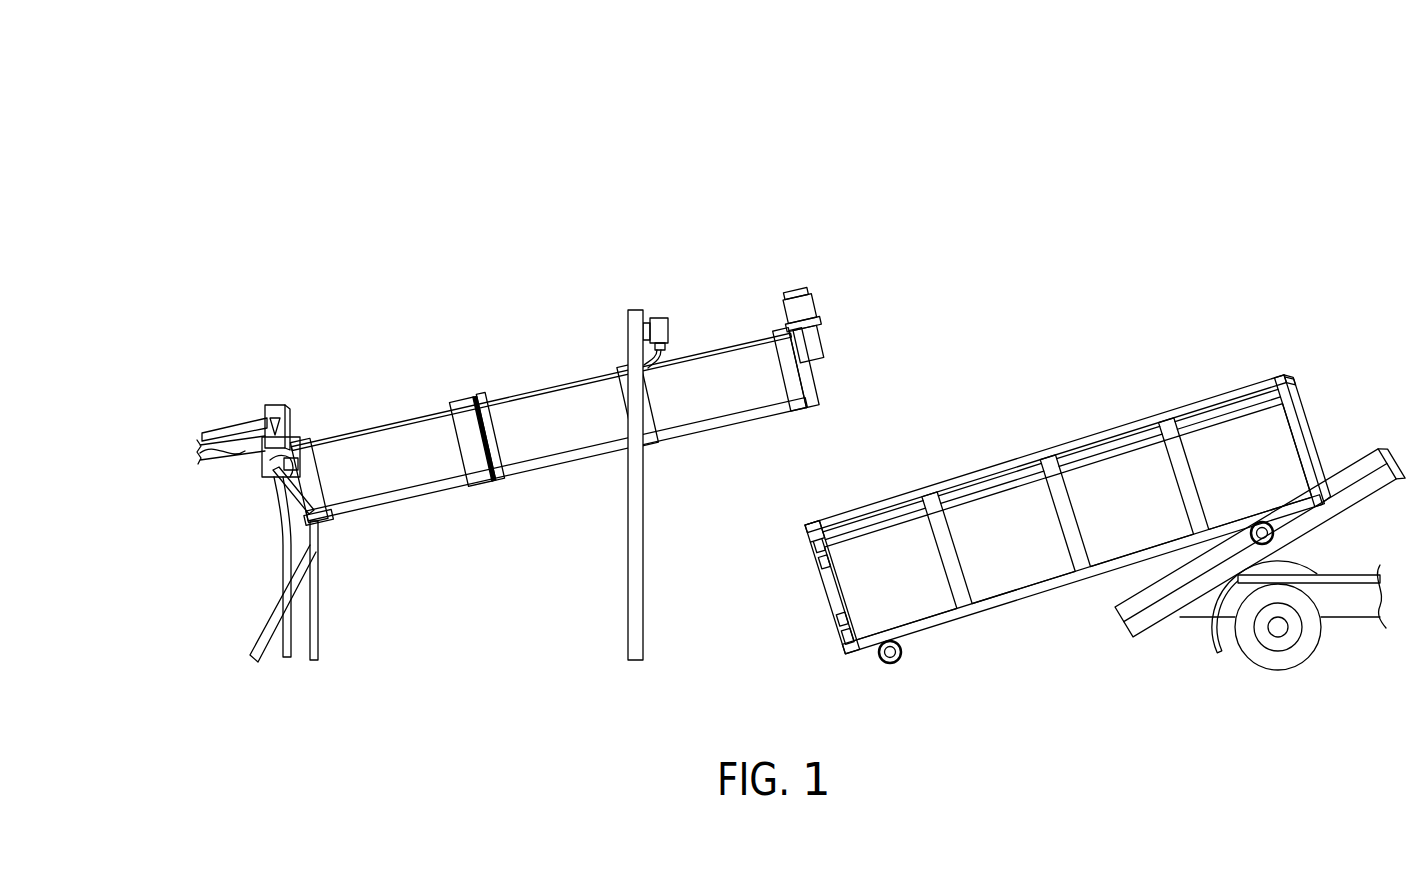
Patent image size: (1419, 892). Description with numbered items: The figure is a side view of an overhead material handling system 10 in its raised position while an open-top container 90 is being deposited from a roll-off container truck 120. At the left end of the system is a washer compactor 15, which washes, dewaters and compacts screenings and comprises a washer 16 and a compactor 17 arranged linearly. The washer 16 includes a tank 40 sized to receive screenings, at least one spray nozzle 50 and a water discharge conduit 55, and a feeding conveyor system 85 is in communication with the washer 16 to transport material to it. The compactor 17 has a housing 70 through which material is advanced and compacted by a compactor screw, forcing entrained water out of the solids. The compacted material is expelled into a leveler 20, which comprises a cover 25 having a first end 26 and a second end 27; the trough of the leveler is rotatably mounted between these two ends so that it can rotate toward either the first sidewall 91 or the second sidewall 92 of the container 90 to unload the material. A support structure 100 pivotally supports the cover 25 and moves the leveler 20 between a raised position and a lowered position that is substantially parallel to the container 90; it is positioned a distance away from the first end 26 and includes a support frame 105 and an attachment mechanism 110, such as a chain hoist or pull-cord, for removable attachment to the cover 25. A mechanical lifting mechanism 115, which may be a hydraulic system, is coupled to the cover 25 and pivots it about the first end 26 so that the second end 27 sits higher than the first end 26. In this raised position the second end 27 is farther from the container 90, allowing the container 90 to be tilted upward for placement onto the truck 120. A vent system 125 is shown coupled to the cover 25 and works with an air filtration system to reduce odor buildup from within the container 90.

The overhead material handling system 10 is at (304, 135).
The washer compactor 15 is at (199, 536).
The washer 16 is at (263, 466).
The compactor 17 is at (273, 473).
The leveler 20 is at (538, 377).
The cover 25 is at (436, 412).
The first end of the cover 26 is at (328, 415).
The second end of the cover 27 is at (763, 324).
The tank 40 is at (206, 451).
The spray nozzle 50 is at (275, 405).
The water discharge conduit 55 is at (282, 536).
The housing 70 is at (284, 480).
The feeding conveyor system 85 is at (209, 415).
The container 90 is at (1076, 437).
The first sidewall of the container 91 is at (1124, 540).
The second sidewall of the container 92 is at (1001, 468).
The support structure 100 is at (616, 585).
The support frame 105 is at (627, 516).
The attachment mechanism 110 is at (656, 363).
The mechanical lifting mechanism 115 is at (669, 332).
The roll-off container truck 120 is at (1270, 672).
The vent system 125 is at (805, 292).